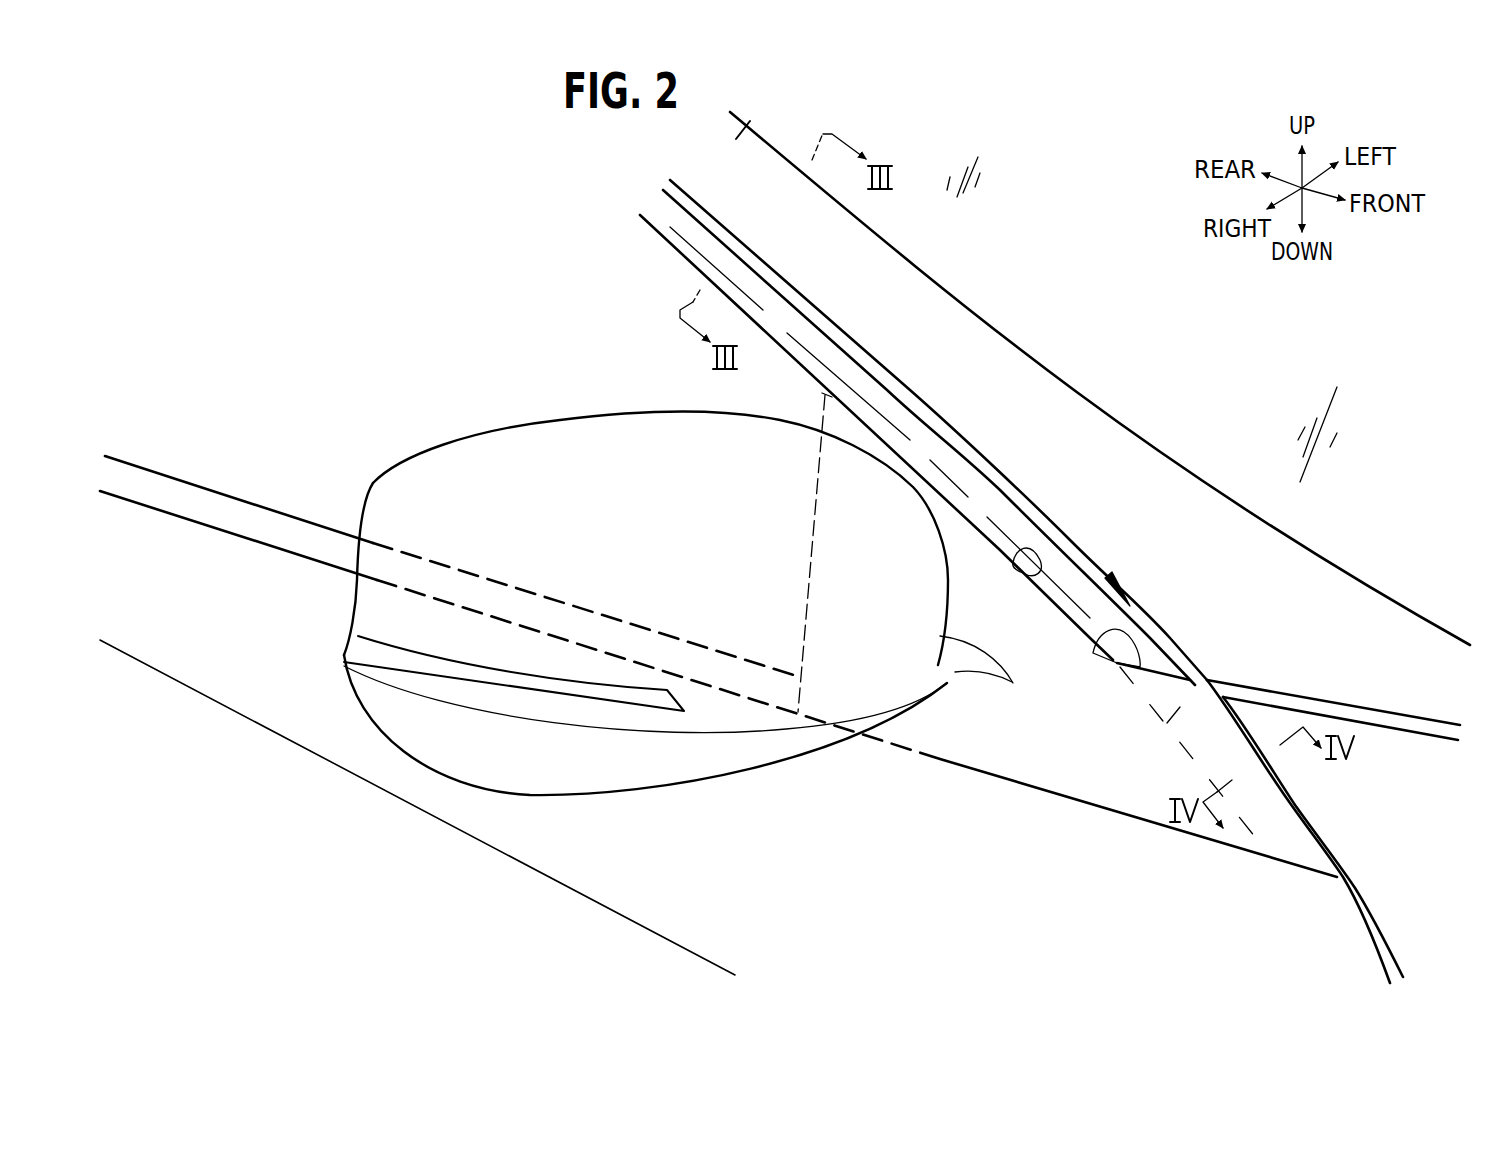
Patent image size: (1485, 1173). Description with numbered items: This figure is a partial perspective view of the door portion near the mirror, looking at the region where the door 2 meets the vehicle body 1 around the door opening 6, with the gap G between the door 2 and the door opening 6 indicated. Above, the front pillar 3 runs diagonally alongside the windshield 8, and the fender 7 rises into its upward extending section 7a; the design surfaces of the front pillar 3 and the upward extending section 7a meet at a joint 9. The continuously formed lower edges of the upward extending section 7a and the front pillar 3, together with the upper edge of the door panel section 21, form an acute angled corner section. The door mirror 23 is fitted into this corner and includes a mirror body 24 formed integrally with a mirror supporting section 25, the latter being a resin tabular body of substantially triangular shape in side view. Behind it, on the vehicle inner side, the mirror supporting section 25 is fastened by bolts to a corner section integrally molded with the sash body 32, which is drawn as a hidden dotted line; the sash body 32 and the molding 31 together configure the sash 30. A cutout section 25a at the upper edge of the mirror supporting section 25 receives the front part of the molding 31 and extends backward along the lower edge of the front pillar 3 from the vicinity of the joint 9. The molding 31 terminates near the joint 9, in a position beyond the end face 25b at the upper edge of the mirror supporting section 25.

The vehicle body 1 is at (747, 123).
The door 2 is at (200, 560).
The front pillar 3 is at (1052, 400).
The door opening 6 is at (735, 240).
The fender 7 is at (1421, 560).
The upward extending section 7a is at (1390, 780).
The windshield 8 is at (995, 169).
The joint 9 is at (1298, 693).
The door panel section 21 is at (1263, 925).
The door mirror 23 is at (684, 667).
The mirror body 24 is at (708, 758).
The mirror supporting section 25 is at (1025, 735).
The cutout section 25a is at (1023, 573).
The end face 25b is at (1093, 655).
The sash 30 is at (915, 447).
The molding 31 is at (820, 343).
The sash body 32 is at (1167, 723).
The gap G is at (1118, 590).